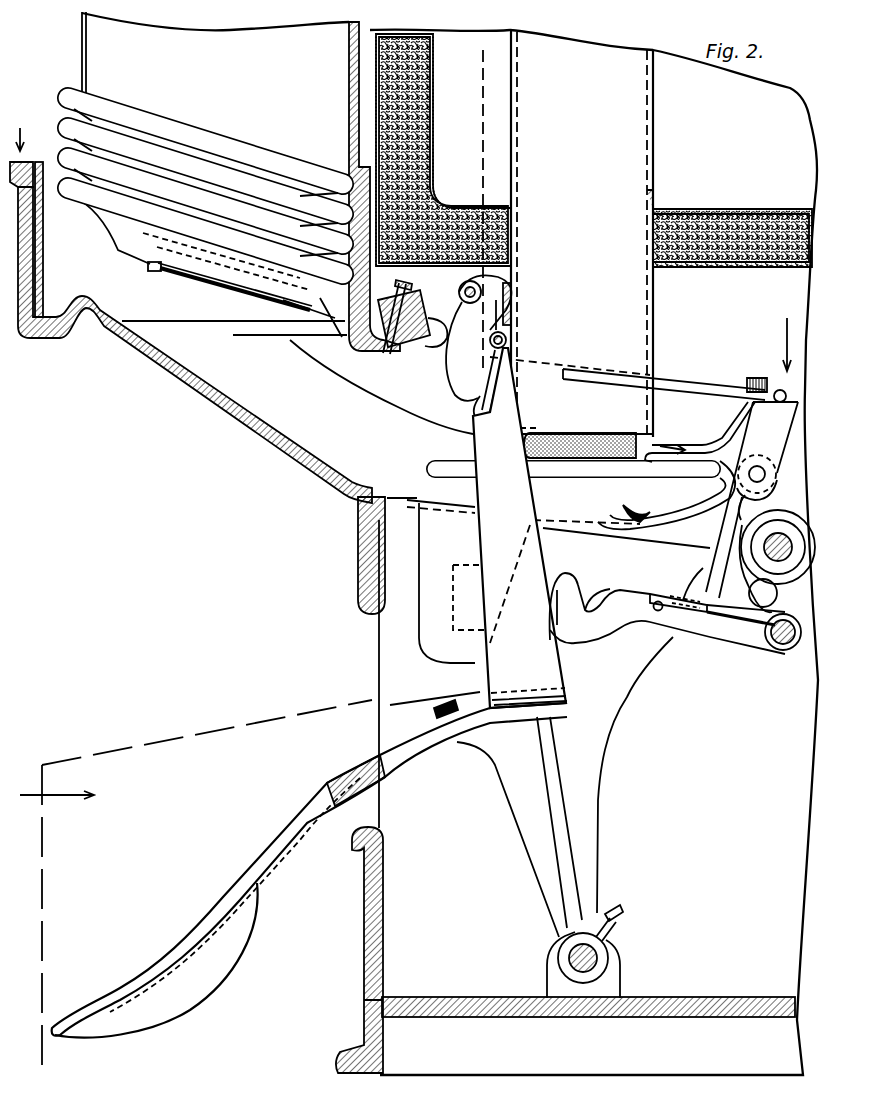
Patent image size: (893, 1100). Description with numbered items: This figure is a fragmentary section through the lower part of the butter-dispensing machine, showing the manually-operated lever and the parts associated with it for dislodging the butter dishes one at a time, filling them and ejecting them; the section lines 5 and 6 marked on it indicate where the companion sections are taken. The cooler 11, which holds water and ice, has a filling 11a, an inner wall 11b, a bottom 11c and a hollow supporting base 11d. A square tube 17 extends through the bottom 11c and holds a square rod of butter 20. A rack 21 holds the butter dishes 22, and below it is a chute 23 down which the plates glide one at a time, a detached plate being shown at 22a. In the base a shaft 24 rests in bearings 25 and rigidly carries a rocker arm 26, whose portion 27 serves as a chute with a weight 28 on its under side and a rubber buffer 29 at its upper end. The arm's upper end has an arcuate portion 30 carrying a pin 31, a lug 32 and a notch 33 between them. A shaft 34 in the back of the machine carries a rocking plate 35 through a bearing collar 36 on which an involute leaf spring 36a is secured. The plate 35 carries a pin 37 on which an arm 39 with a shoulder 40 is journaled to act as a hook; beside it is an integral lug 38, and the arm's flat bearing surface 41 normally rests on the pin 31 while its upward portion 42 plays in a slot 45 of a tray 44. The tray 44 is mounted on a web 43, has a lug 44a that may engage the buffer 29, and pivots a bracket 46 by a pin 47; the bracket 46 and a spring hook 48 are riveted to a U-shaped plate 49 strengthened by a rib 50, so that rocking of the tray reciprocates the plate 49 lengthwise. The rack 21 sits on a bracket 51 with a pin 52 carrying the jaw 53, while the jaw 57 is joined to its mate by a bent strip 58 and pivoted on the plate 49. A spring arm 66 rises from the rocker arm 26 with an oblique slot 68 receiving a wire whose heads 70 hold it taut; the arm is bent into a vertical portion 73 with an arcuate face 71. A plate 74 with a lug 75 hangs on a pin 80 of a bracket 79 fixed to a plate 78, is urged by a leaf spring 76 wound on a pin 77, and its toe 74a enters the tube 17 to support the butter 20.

The section line 5— 5 is at (253, 559).
The section line 6— 6 is at (810, 369).
The cooler 11 is at (378, 36).
The filling 11a is at (430, 118).
The inner wall 11b is at (428, 150).
The bottom 11c is at (733, 268).
The supporting base 11d is at (372, 1005).
The square tube 17 is at (623, 147).
The butter 20 is at (600, 432).
The rack 21 is at (82, 25).
The butter dishes 22 is at (66, 97).
The detached butter plate 22a is at (440, 460).
The chute 23 is at (212, 406).
The shaft 24 is at (597, 958).
The bearings 25 is at (547, 975).
The rocker arm 26 is at (575, 771).
The chute portion 27 is at (275, 870).
The weight 28 is at (205, 980).
The rubber buffer 29 is at (432, 712).
The arcuate portion 30 is at (675, 622).
The pin 31 is at (655, 612).
The lug 32 is at (566, 580).
The notch 33 is at (604, 598).
The shaft 34 is at (782, 535).
The rocking plate 35 is at (755, 580).
The bearing collar 36 is at (790, 560).
The leaf spring 36a is at (738, 527).
The pin 37 is at (783, 645).
The lug 38 is at (696, 584).
The arm 39 is at (748, 638).
The shoulder 40 is at (706, 622).
The flat bearing surface 41 is at (672, 600).
The upwardly extending portion 42 is at (722, 525).
The web 43 is at (618, 541).
The tray 44 is at (445, 478).
The lug 44a is at (506, 584).
The slot 45 is at (656, 521).
The bracket 46 is at (770, 438).
The pin 47 is at (768, 470).
The spring hook 48 is at (745, 415).
The U-shaped plate 49 is at (688, 383).
The rib 50 is at (660, 368).
The bracket 51 is at (388, 292).
The pin 52 is at (414, 290).
The jaw 53 is at (143, 233).
The jaw 57 is at (176, 275).
The strip 58 is at (283, 300).
The spring arm 66 is at (484, 597).
The slots 68 is at (505, 440).
The heads 70 is at (498, 453).
The arcuate face 71 is at (512, 376).
The vertical portion 73 is at (515, 396).
The plate 74 is at (486, 375).
The toe 74a is at (540, 428).
The lug 75 is at (470, 395).
The leaf spring 76 is at (447, 370).
The pin 77 is at (462, 285).
The plate 78 is at (512, 298).
The bracket 79 is at (500, 320).
The pin 80 is at (508, 341).